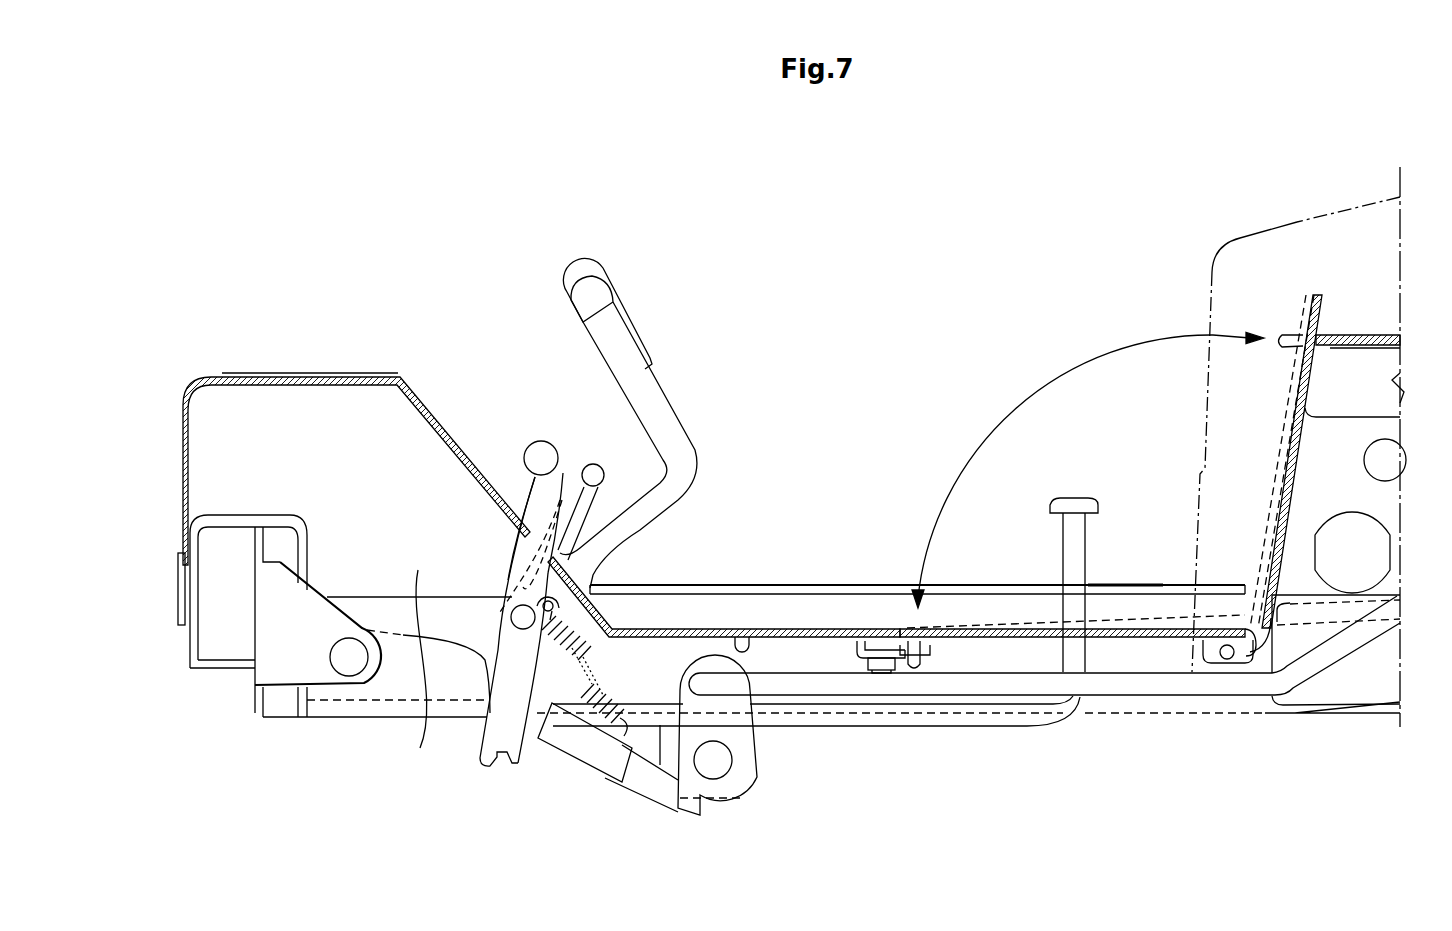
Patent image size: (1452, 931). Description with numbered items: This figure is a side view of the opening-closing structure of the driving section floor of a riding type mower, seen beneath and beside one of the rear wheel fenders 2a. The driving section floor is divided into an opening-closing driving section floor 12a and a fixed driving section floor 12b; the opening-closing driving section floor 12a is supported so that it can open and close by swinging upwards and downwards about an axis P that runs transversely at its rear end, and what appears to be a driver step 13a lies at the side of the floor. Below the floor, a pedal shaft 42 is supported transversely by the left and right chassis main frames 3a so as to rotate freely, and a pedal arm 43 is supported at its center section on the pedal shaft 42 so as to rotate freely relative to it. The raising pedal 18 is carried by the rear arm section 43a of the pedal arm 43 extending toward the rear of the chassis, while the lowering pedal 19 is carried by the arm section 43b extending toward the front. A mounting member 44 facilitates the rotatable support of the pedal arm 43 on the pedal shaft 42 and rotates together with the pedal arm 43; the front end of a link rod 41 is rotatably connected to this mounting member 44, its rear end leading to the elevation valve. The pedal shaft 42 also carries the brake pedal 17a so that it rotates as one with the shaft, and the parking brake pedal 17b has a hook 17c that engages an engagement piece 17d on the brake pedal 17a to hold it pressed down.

The rear wheel fender 2a is at (1318, 215).
The chassis main frame 3a is at (877, 600).
The opening-closing driving section floor 12a is at (992, 630).
The fixed driving section floor 12b is at (715, 632).
The flange 13a is at (806, 583).
The brake pedal 17a is at (637, 312).
The parking brake pedal 17b is at (543, 455).
The hook 17c is at (477, 737).
The engagement piece 17d is at (572, 742).
The raising pedal 18 is at (1073, 500).
The lowering pedal 19 is at (593, 470).
The link rod 41 is at (1120, 697).
The pedal shaft 42 is at (713, 762).
The pedal arm 43 is at (1036, 742).
The rear arm section 43a is at (956, 728).
The arm section 43b is at (645, 745).
The mounting member 44 is at (677, 693).
The axis P is at (1227, 660).